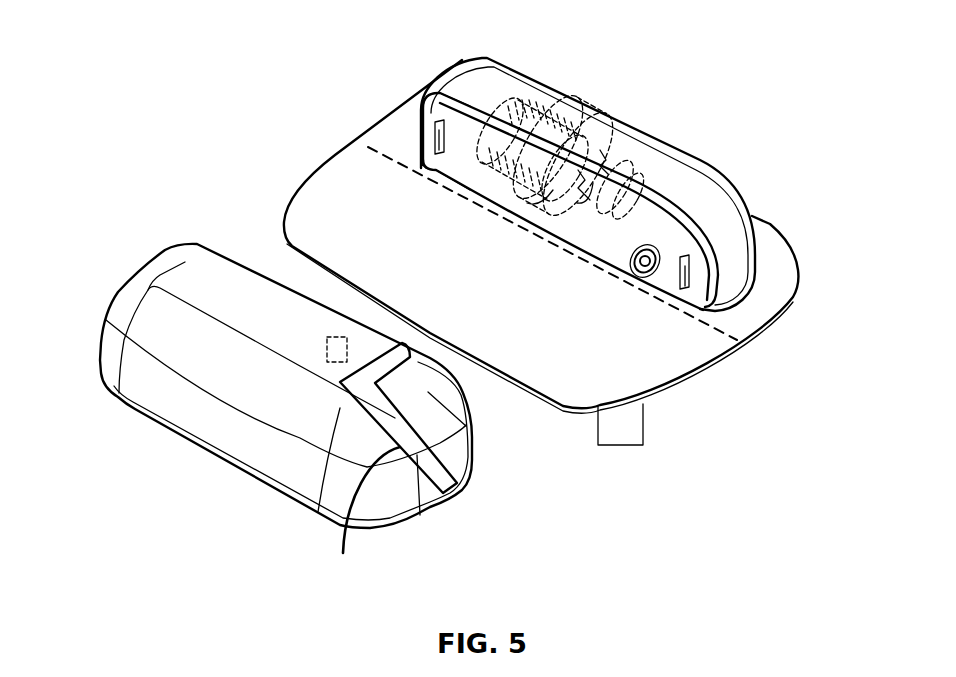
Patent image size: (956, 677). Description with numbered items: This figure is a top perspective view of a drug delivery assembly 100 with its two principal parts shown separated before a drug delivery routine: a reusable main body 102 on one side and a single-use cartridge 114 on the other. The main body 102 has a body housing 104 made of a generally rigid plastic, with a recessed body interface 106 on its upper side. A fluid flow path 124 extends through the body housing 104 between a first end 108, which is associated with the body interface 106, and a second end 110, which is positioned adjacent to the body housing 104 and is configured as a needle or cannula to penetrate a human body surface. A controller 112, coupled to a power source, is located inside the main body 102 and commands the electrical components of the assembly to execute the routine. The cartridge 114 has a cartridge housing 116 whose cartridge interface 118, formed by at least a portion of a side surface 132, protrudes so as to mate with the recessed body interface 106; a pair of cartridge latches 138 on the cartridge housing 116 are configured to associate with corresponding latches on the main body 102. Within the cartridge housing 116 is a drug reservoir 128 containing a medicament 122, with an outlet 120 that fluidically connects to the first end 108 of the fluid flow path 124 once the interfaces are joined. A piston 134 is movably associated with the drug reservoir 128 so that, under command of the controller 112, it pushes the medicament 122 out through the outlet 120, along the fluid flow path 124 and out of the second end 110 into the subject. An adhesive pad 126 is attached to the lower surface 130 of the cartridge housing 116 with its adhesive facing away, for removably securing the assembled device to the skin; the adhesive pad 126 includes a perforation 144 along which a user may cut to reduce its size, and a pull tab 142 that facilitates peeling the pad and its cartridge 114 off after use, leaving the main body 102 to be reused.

The drug delivery assembly 100 is at (218, 118).
The main body 102 is at (203, 453).
The body housing 104 is at (198, 287).
The body interface 106 is at (293, 290).
The first end 108 is at (450, 375).
The second end 110 is at (450, 494).
The controller 112 is at (335, 365).
The cartridge 114 is at (600, 88).
The cartridge housing 116 is at (703, 185).
The cartridge interface 118 is at (466, 118).
The outlet 120 is at (645, 260).
The medicament 122 is at (605, 156).
The fluid flow path 124 is at (360, 516).
The adhesive pad 126 is at (637, 353).
The drug reservoir 128 is at (640, 170).
The lower surface 130 is at (733, 340).
The side surface 132 is at (530, 203).
The piston 134 is at (575, 140).
The cartridge latch 138 is at (427, 117).
The pull tab 142 is at (633, 450).
The perforation 144 is at (421, 160).